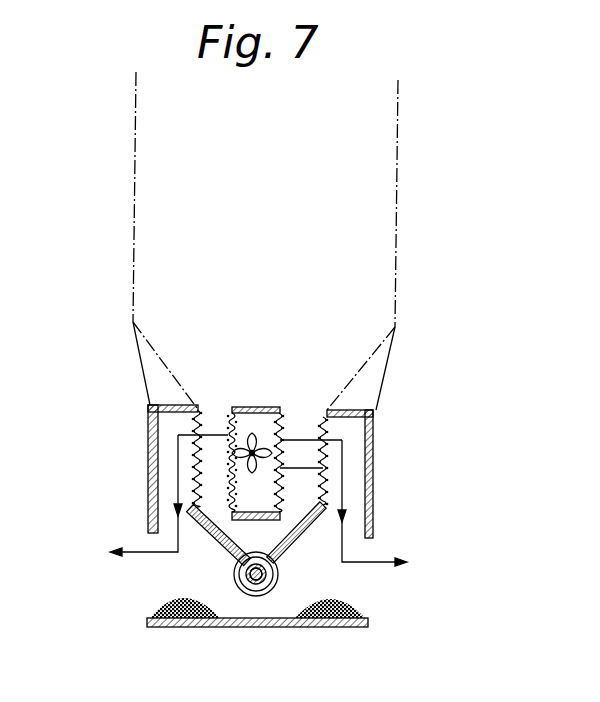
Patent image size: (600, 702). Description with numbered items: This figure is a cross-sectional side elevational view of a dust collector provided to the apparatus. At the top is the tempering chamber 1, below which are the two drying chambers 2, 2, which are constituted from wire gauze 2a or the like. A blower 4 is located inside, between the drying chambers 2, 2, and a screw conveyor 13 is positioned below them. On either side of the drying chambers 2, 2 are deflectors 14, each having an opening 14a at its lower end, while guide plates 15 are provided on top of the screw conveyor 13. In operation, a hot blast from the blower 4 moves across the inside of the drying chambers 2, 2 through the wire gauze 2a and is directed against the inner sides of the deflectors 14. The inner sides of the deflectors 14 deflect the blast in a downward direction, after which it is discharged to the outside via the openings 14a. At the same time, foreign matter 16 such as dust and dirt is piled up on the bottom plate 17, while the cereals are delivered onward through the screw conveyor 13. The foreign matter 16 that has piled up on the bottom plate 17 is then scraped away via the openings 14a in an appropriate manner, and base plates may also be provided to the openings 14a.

The tempering chamber 1 is at (398, 201).
The drying chamber 2 is at (208, 452).
The wire gauze 2a is at (228, 487).
The blower 4 is at (270, 448).
The screw conveyor 13 is at (265, 585).
The deflector 14 is at (147, 512).
The opening 14a is at (155, 570).
The guide plate 15 is at (217, 540).
The foreign matter 16 is at (147, 620).
The bottom plate 17 is at (197, 622).